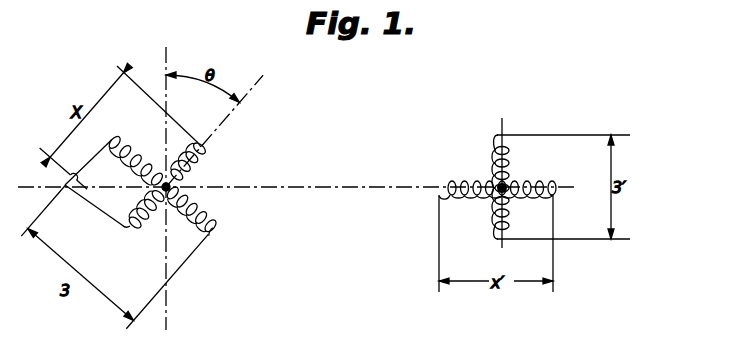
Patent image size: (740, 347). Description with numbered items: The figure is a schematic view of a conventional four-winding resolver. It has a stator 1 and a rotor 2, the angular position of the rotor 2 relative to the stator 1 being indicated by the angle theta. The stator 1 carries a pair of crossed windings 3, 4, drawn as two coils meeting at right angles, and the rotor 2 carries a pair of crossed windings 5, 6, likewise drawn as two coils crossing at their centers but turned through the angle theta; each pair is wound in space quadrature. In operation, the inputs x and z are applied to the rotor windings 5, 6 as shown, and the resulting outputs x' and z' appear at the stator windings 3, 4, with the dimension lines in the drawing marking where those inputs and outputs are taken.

The stator 1 is at (470, 156).
The rotor 2 is at (202, 211).
The stator winding 3 is at (512, 165).
The stator winding 4 is at (548, 181).
The rotor winding 5 is at (129, 149).
The rotor winding 6 is at (196, 161).